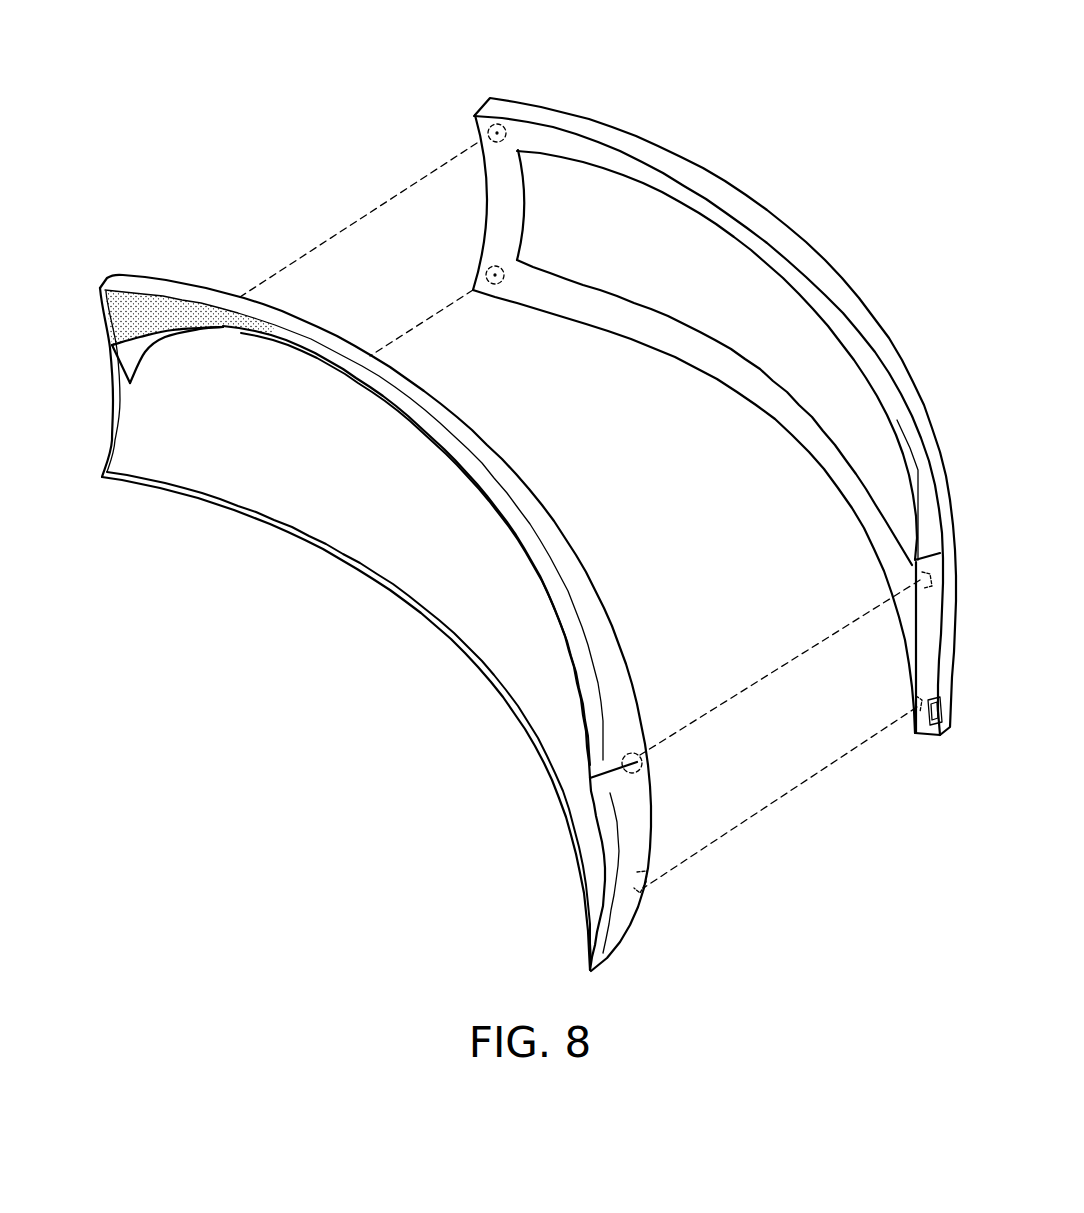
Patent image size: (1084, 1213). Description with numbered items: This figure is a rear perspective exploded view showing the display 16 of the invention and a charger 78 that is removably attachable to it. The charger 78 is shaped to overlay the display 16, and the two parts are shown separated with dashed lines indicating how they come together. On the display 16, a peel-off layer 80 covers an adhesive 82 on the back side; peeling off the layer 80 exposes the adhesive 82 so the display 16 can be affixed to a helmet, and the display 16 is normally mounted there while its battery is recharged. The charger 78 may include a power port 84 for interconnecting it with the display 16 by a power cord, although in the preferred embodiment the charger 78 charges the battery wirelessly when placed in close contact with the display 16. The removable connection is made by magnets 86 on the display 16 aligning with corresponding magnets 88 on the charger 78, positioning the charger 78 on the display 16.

The display 16 is at (222, 268).
The charger 78 is at (563, 90).
The layer 80 is at (116, 357).
The adhesive 82 is at (120, 315).
The power port 84 is at (932, 722).
The magnets 86 is at (640, 752).
The magnets 88 is at (487, 130).